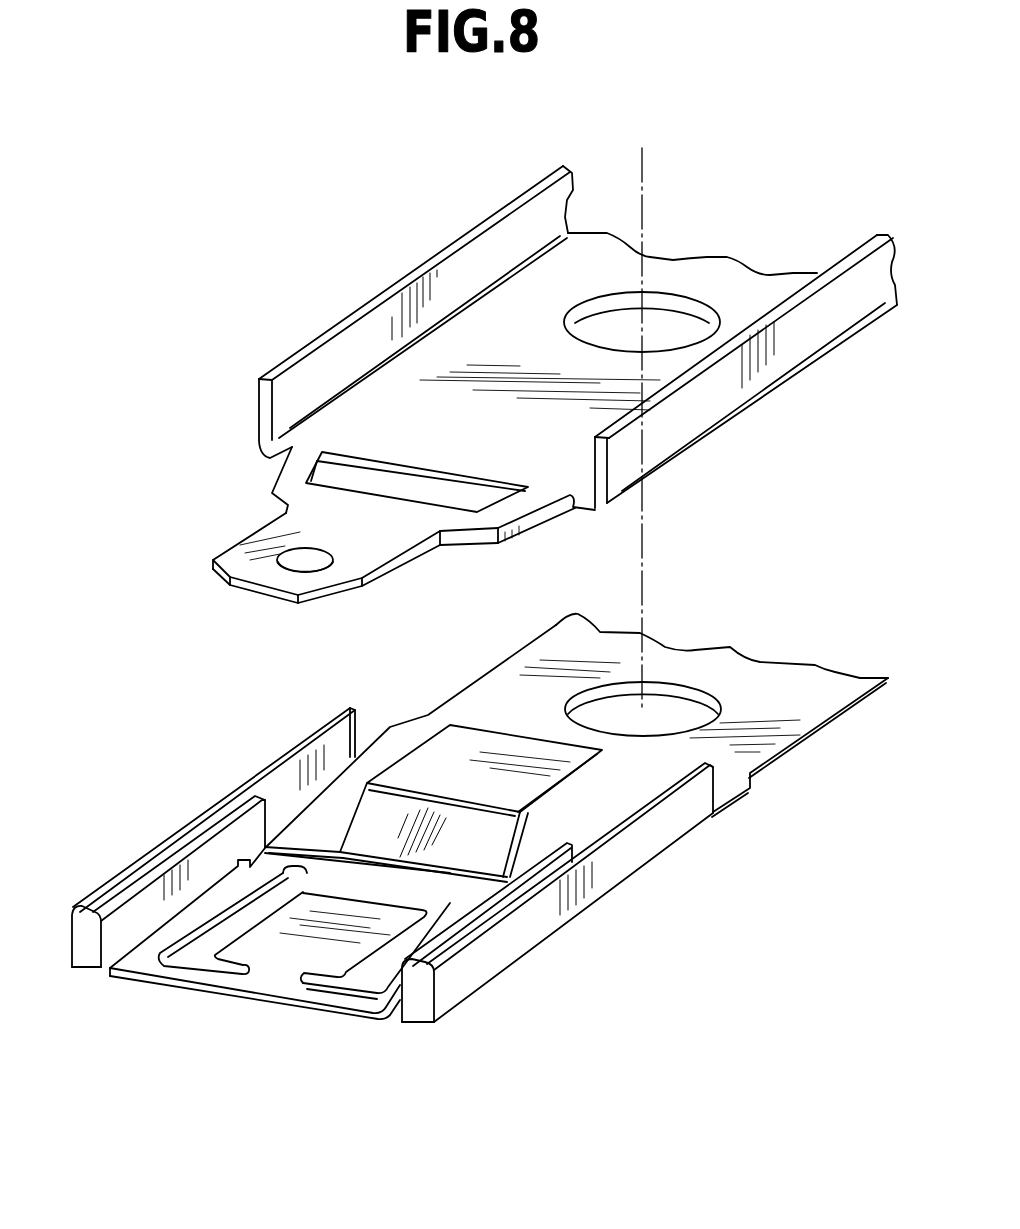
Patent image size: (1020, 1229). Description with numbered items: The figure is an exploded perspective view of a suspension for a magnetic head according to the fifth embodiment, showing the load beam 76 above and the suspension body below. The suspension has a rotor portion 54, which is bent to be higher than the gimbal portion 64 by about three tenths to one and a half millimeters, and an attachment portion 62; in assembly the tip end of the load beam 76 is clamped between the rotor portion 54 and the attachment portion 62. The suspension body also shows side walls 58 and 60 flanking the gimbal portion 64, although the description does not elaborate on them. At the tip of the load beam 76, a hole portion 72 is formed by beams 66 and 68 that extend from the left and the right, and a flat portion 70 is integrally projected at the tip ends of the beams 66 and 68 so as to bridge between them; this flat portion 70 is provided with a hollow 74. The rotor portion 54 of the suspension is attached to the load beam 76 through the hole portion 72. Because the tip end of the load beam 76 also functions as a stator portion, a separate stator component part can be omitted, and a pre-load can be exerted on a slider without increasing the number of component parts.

The rotor portion 54 is at (453, 758).
The first side wall 58 is at (87, 953).
The second side wall 60 is at (502, 940).
The attachment portion 62 is at (787, 693).
The gimbal portion 64 is at (300, 948).
The beam 66 is at (288, 464).
The beam 68 is at (517, 503).
The flat portion 70 is at (326, 532).
The hole portion 72 is at (400, 486).
The hollow 74 is at (318, 562).
The load beam 76 is at (688, 398).